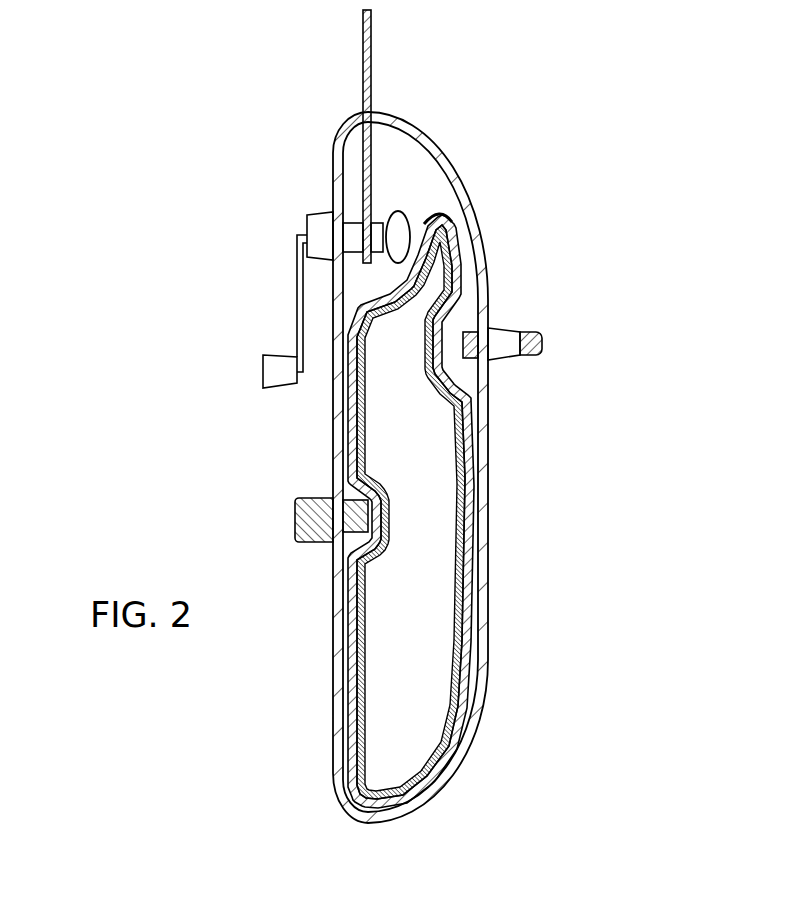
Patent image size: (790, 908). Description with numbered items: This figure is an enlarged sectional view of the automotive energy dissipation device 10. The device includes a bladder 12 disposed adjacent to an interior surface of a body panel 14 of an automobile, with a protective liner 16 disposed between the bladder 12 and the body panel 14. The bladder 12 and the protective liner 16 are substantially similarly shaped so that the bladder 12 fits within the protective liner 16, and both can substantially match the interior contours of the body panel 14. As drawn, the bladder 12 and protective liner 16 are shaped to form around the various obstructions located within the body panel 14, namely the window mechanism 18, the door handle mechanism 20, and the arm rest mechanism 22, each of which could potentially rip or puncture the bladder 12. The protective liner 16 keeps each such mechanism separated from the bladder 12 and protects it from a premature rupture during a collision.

The automotive energy dissipation device 10 is at (418, 416).
The bladder 12 is at (468, 596).
The body panel 14 is at (487, 503).
The protective liner 16 is at (473, 553).
The window mechanism 18 is at (397, 230).
The door handle mechanism 20 is at (490, 328).
The arm rest mechanism 22 is at (357, 514).